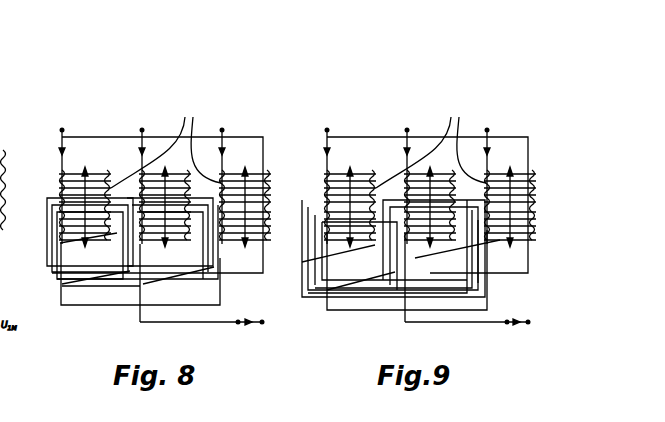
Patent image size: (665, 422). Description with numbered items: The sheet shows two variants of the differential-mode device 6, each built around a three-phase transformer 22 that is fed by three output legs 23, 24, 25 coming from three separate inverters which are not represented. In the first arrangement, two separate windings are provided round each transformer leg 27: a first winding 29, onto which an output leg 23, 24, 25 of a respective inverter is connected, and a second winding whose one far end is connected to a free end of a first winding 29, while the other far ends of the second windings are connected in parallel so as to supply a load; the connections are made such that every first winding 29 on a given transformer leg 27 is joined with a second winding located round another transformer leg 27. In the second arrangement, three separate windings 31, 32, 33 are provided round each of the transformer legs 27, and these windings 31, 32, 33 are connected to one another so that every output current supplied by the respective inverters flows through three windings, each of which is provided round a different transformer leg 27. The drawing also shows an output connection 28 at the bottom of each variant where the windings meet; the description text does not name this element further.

In FIG. 8, the differential-mode device 6 is at (163, 56).
In FIG. 9, the differential-mode device 6 is at (430, 131).
In FIG. 8, the 3-phase transformer 22 is at (96, 137).
In FIG. 9, the 3-phase transformer 22 is at (427, 169).
In FIG. 8, the output leg 23 is at (58, 131).
In FIG. 9, the output leg 23 is at (315, 160).
In FIG. 8, the output leg 24 is at (155, 136).
In FIG. 9, the output leg 24 is at (428, 150).
In FIG. 8, the output leg 25 is at (232, 136).
In FIG. 9, the output leg 25 is at (498, 149).
In FIG. 8, the transformer leg 27 is at (58, 263).
In FIG. 9, the transformer leg 27 is at (383, 268).
In FIG. 8, the output terminal 28 is at (236, 326).
In FIG. 9, the output terminal 28 is at (477, 338).
In FIG. 8, the first winding 29 is at (166, 143).
In FIG. 9, the separate winding 31 is at (431, 143).
In FIG. 8, the separate winding 32 is at (60, 207).
In FIG. 9, the separate winding 32 is at (437, 235).
In FIG. 9, the separate winding 33 is at (428, 248).